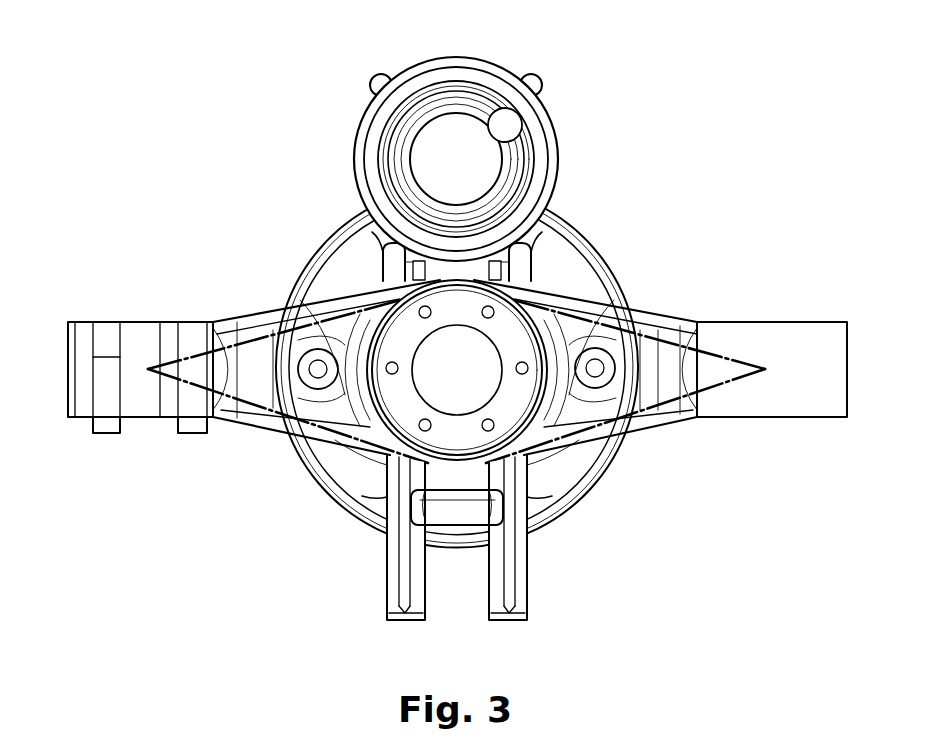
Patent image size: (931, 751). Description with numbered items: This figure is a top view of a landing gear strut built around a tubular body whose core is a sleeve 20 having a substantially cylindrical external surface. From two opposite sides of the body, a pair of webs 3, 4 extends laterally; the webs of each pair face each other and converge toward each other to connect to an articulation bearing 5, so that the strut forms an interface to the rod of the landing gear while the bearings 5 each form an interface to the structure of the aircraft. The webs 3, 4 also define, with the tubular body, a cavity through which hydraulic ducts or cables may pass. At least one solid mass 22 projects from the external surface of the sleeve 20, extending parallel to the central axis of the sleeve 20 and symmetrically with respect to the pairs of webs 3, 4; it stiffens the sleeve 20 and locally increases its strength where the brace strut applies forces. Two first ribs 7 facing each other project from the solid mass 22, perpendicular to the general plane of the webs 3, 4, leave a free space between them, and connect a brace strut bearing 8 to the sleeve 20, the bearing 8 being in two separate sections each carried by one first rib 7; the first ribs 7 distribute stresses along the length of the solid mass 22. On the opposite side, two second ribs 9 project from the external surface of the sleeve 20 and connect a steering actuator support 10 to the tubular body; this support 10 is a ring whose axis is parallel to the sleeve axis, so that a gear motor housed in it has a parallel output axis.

The web 3 is at (297, 423).
The web 4 is at (247, 318).
The articulation bearing 5 is at (105, 337).
The first rib 7 is at (385, 493).
The brace strut bearing 8 is at (397, 588).
The second rib 9 is at (383, 253).
The steering actuator support 10 is at (510, 72).
The sleeve 20 is at (523, 342).
The solid mass 22 is at (478, 475).